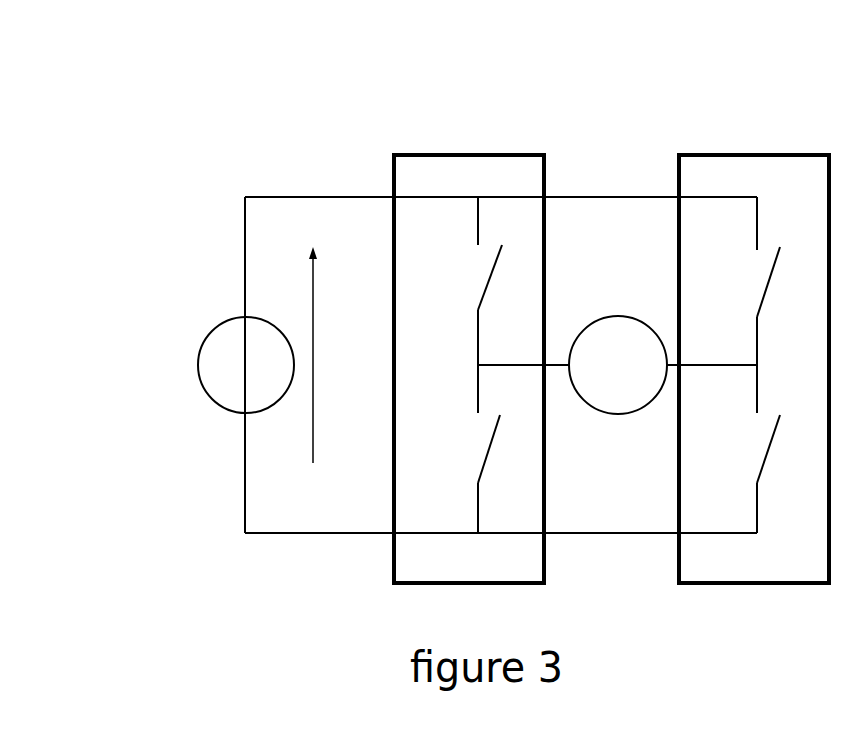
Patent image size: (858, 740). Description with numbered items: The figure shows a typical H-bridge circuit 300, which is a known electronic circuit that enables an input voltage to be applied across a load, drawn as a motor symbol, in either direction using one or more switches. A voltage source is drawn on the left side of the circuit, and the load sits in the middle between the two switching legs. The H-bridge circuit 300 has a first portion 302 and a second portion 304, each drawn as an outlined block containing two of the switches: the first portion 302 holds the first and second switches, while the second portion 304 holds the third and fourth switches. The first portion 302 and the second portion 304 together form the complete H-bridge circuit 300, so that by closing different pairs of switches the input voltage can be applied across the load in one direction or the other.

The H-bridge circuit 300 is at (236, 259).
The first portion 302 is at (470, 141).
The second portion 304 is at (754, 141).